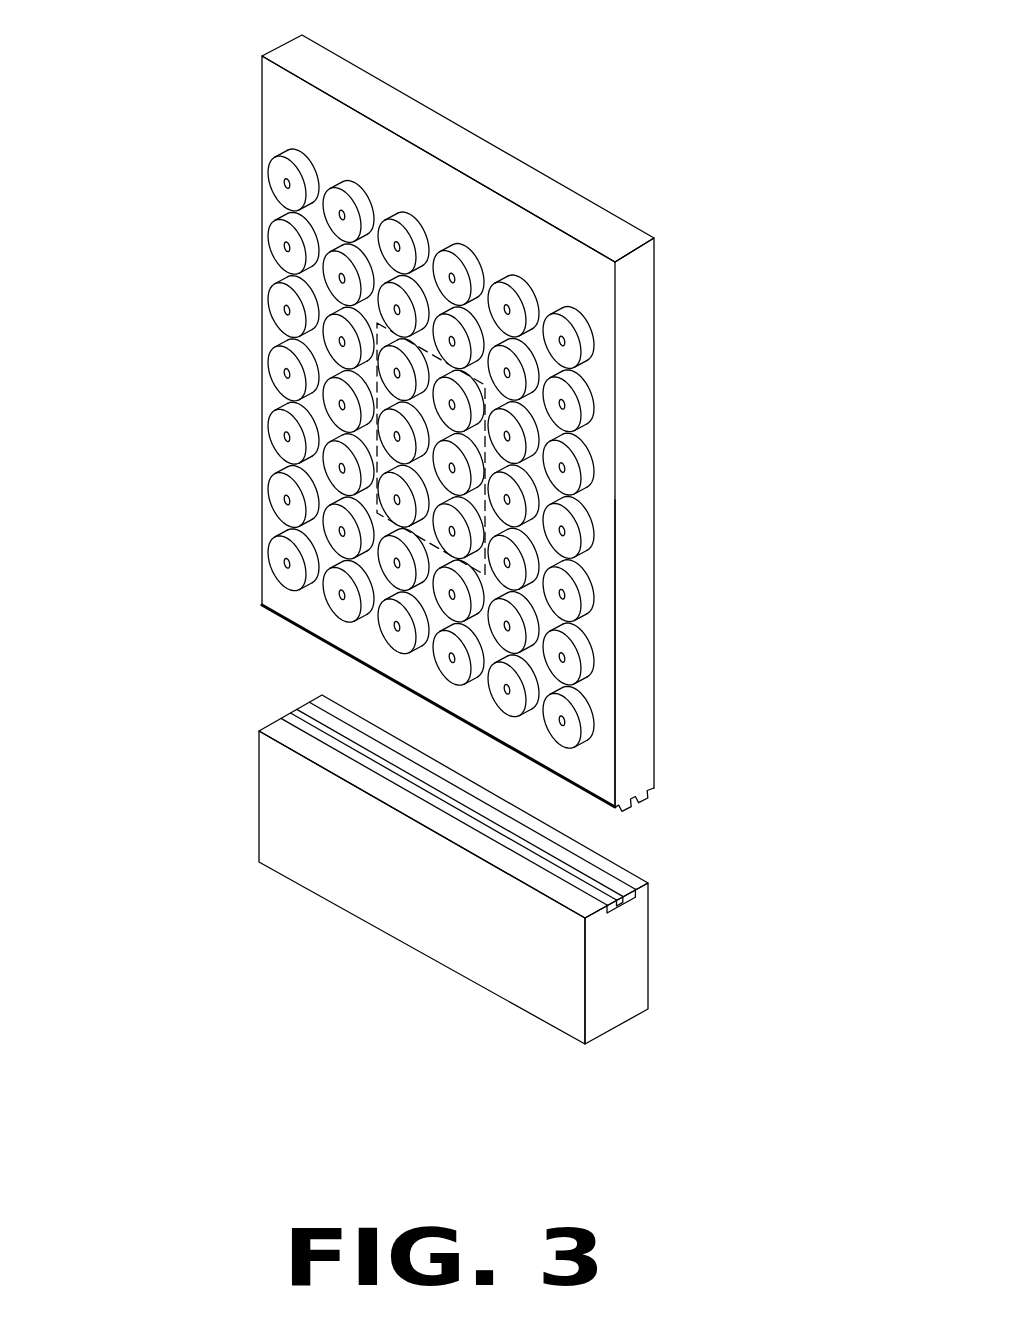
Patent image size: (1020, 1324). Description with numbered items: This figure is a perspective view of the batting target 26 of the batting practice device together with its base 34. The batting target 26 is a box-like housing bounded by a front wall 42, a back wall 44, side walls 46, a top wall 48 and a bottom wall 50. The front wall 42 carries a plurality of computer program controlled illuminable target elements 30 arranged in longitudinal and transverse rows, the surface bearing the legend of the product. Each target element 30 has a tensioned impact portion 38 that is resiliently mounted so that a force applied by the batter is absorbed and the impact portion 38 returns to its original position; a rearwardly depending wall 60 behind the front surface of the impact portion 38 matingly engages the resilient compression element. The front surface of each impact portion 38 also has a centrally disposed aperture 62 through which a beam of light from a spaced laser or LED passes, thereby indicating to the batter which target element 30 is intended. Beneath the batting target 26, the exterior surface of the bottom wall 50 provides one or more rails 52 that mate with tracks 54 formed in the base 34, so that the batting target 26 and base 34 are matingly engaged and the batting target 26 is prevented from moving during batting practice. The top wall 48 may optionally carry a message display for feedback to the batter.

The batting target 26 is at (455, 422).
The target element 30 is at (454, 543).
The base 34 is at (451, 887).
The tensioned impact portion 38 is at (449, 448).
The front wall 42 is at (280, 132).
The back wall 44 is at (655, 518).
The side wall 46 is at (272, 402).
The top wall 48 is at (460, 140).
The bottom wall 50 is at (295, 625).
The rail 52 is at (656, 795).
The track 54 is at (420, 792).
The rearwardly depending wall 60 is at (587, 537).
The aperture 62 is at (288, 247).